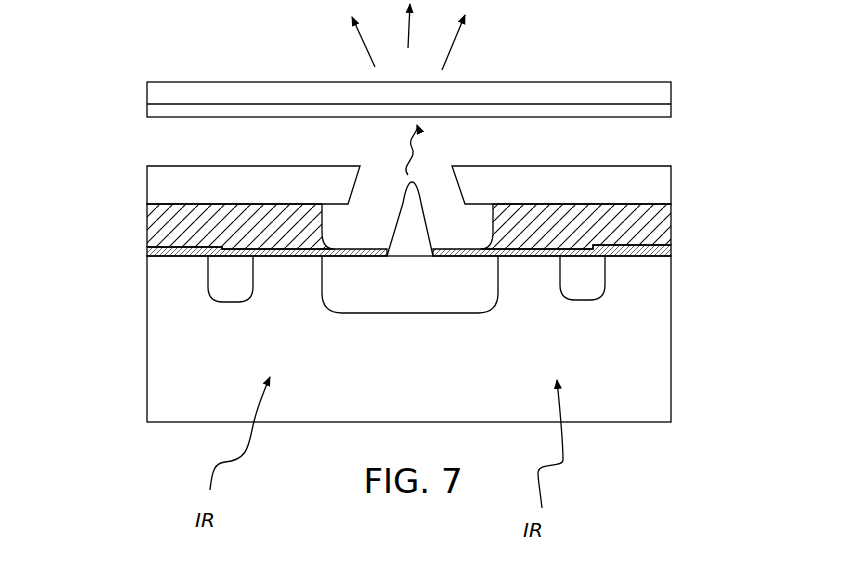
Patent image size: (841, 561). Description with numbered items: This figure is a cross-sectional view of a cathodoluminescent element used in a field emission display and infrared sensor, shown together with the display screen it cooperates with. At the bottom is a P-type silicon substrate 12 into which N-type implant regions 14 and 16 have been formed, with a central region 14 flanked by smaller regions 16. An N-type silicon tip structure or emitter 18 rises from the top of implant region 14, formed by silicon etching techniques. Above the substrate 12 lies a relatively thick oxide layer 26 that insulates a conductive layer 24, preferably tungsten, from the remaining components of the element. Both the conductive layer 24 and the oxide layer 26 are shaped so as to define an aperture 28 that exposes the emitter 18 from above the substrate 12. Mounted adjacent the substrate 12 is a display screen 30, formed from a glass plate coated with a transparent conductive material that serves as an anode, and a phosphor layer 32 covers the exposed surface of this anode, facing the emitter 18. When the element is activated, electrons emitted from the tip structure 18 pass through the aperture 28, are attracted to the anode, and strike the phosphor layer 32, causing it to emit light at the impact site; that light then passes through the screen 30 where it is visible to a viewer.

The P-type silicon substrate 12 is at (628, 409).
The N-type implant region 14 is at (437, 307).
The N-type implant region 16 is at (214, 293).
The emitter 18 is at (410, 202).
The conductive layer 24 is at (152, 187).
The oxide layer 26 is at (152, 233).
The aperture 28 is at (371, 173).
The display screen 30 is at (658, 89).
The phosphor layer 32 is at (147, 112).